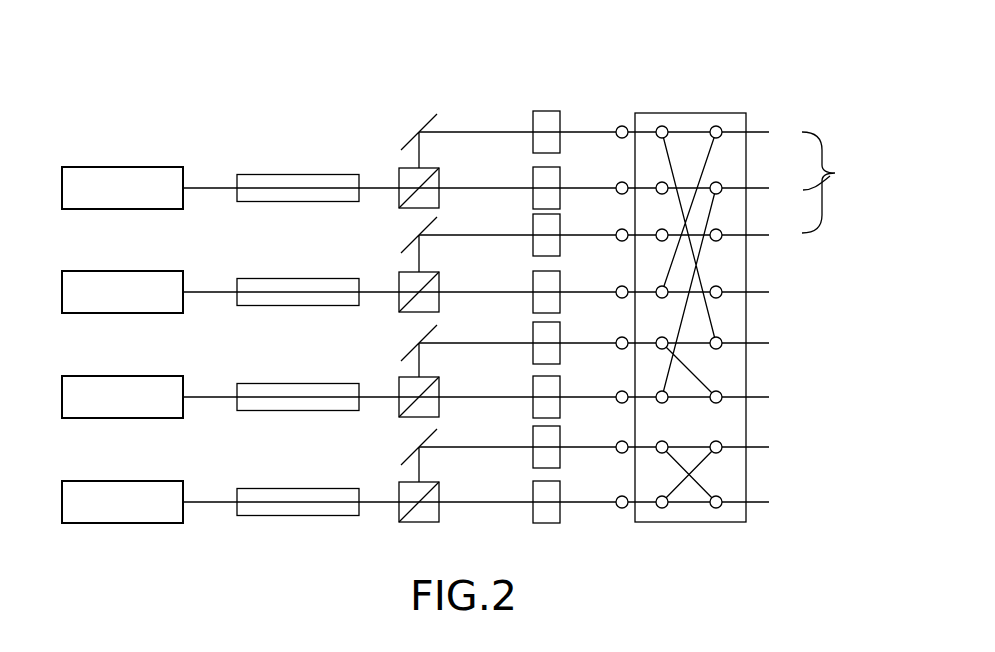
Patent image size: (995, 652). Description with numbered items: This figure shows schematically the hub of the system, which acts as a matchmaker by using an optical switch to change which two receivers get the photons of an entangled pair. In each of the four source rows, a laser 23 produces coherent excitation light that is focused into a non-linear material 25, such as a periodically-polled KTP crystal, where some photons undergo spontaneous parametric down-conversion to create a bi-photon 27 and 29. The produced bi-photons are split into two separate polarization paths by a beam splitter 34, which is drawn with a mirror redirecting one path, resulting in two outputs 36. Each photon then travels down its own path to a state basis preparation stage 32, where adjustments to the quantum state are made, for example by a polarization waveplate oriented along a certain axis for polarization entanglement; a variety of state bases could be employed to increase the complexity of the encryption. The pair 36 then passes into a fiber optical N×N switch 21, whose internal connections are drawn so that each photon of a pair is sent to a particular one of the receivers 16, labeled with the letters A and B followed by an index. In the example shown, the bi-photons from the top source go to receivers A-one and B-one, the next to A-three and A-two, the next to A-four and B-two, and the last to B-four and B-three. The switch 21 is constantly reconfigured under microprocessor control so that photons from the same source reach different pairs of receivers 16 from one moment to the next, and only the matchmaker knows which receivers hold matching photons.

The laser 23 is at (79, 167).
The non-linear material 25 is at (237, 178).
The beam splitter 34 is at (399, 167).
The bi-photon 27 is at (453, 132).
The bi-photon 29 is at (458, 187).
The state basis preparation stage 32 is at (560, 148).
The outputs 36 is at (622, 126).
The N×N switch 21 is at (747, 112).
The receivers 16 is at (831, 182).